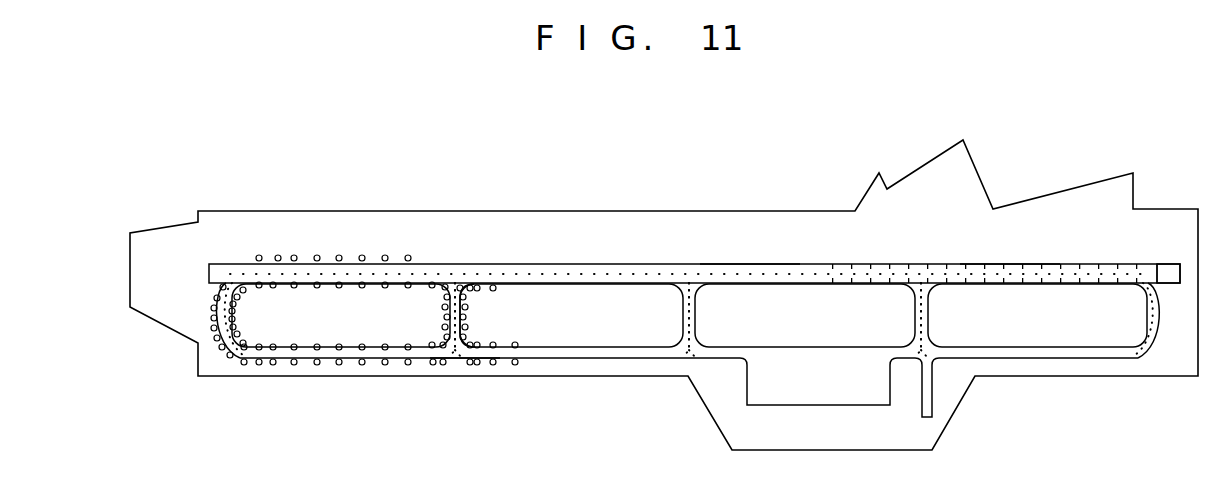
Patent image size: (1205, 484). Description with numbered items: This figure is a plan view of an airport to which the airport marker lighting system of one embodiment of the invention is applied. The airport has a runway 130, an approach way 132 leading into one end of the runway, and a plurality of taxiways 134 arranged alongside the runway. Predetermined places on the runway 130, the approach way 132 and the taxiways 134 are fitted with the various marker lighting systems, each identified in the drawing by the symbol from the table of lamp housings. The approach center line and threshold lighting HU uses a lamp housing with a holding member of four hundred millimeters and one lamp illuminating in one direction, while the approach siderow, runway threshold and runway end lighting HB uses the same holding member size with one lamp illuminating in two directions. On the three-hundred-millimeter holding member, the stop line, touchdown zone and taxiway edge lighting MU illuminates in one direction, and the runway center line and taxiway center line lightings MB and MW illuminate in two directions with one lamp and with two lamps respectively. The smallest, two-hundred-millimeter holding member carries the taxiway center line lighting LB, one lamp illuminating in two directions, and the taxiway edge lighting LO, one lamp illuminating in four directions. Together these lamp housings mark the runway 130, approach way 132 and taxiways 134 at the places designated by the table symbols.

The approach siderow, runway threshold and runway end lighting HB is at (224, 283).
The runway center line and taxiway center line lighting MB is at (307, 278).
The runway center line and taxiway center line lighting MW is at (456, 283).
The stop line, touchdown zone and taxiway edge lighting MU is at (687, 280).
The runway 130 is at (748, 277).
The approach way 132 is at (1013, 264).
The approach center line and threshold lighting HU is at (1178, 268).
The taxiways 134 is at (230, 318).
The taxiway edge lighting LO is at (465, 317).
The taxiway center line lighting LB is at (460, 350).